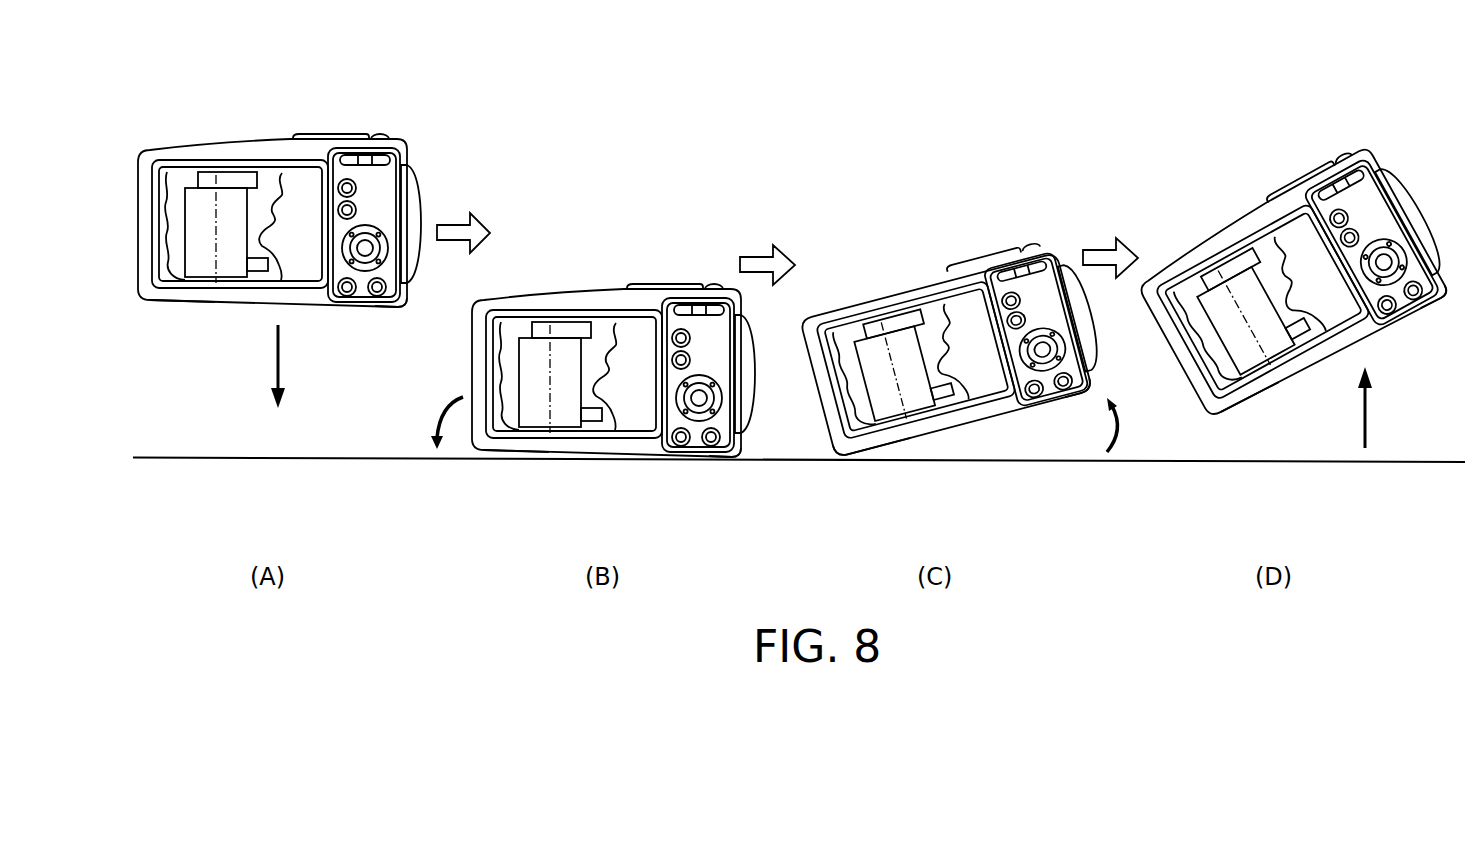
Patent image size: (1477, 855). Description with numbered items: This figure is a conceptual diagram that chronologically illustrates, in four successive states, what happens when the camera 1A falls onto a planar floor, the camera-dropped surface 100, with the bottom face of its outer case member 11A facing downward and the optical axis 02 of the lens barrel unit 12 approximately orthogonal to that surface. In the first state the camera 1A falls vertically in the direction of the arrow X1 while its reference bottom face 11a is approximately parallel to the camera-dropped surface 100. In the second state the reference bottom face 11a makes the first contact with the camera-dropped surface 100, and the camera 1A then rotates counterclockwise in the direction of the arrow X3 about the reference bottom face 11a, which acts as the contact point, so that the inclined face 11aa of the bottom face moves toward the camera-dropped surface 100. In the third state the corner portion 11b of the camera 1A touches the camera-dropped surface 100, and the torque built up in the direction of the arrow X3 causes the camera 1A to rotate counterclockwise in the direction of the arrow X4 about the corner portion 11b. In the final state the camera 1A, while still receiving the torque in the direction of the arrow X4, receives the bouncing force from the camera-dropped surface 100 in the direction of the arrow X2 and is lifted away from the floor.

The camera 1A is at (800, 289).
The outer case member 11A is at (273, 140).
The lens barrel unit 12 is at (223, 173).
The optical axis O2 02 is at (213, 184).
The reference bottom face 11a is at (390, 313).
The inclined face 11aa is at (198, 308).
The corner portion 11b is at (834, 464).
The camera-dropped surface 100 is at (170, 455).
The arrow X1 is at (280, 350).
The arrow X2 is at (1368, 413).
The arrow X3 is at (432, 413).
The arrow X4 is at (1118, 428).